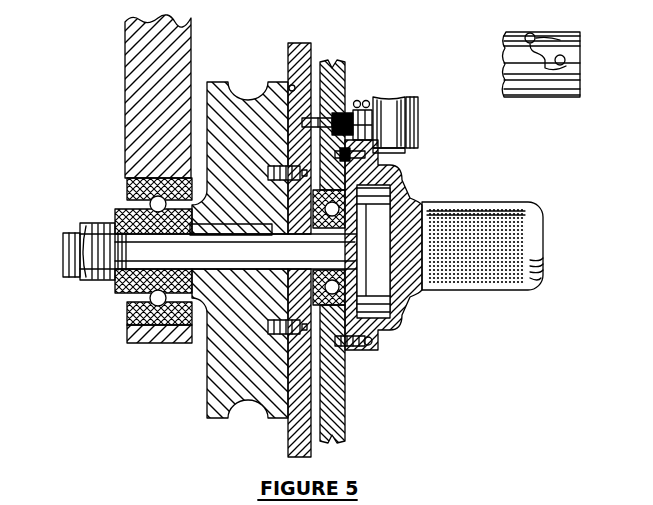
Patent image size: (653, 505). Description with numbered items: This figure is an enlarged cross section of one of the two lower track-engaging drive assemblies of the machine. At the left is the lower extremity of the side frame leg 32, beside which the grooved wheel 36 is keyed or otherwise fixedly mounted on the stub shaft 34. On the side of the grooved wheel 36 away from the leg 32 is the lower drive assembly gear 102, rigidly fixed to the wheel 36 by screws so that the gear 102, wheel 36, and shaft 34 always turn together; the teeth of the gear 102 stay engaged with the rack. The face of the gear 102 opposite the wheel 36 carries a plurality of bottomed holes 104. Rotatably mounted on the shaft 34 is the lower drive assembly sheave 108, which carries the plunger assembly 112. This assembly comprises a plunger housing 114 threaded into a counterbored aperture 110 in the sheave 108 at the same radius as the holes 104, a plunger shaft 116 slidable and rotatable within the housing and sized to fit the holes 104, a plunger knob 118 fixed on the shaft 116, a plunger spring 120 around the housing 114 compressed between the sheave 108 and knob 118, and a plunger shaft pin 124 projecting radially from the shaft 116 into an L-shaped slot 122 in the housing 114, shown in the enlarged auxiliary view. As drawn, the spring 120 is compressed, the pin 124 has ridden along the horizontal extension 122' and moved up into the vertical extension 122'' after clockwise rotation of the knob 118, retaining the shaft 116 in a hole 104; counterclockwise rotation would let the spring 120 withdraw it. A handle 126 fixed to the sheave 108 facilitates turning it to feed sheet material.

The side frame leg 32 is at (125, 160).
The stub shaft 34 is at (63, 240).
The grooved wheel 36 is at (207, 372).
The lower drive assembly gear 102 is at (298, 44).
The bottomed holes 104 is at (294, 418).
The lower drive assembly pulley or sheave 108 is at (330, 70).
The hole or aperture 110 is at (336, 113).
The plunger assembly 112 is at (406, 100).
The plunger housing 114 is at (395, 152).
The plunger shaft 116 is at (288, 86).
The plunger knob 118 is at (404, 114).
The plunger spring 120 is at (352, 155).
The L-shaped slot 122 is at (378, 106).
The horizontal extension 122' is at (577, 50).
The vertical extension 122'' is at (561, 24).
The plunger shaft pin 124 is at (361, 100).
The handle 126 is at (512, 205).